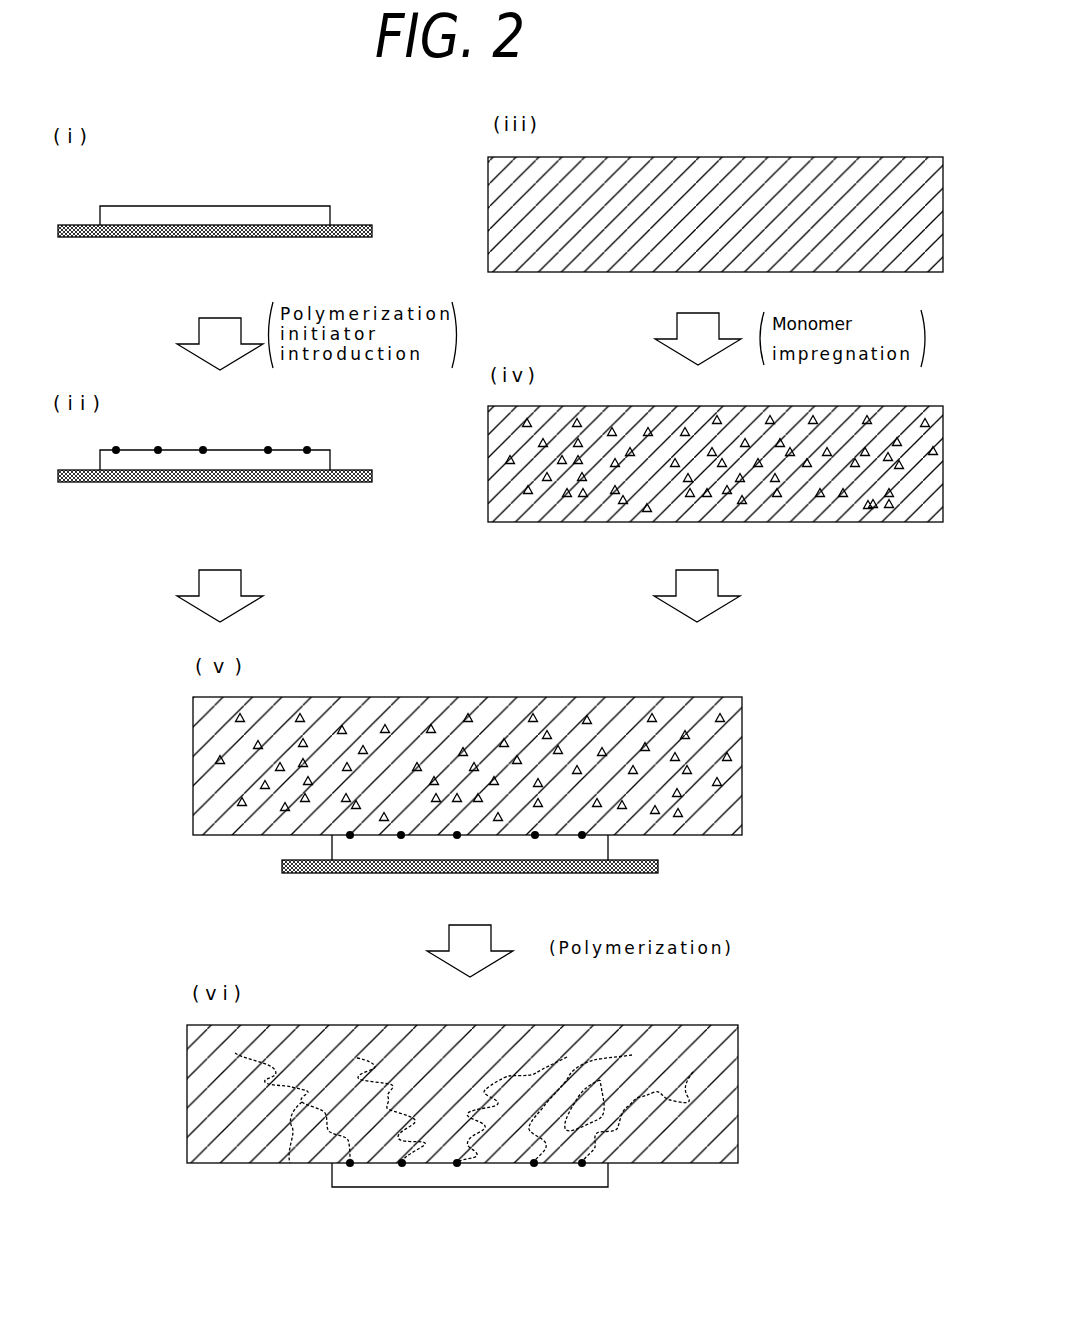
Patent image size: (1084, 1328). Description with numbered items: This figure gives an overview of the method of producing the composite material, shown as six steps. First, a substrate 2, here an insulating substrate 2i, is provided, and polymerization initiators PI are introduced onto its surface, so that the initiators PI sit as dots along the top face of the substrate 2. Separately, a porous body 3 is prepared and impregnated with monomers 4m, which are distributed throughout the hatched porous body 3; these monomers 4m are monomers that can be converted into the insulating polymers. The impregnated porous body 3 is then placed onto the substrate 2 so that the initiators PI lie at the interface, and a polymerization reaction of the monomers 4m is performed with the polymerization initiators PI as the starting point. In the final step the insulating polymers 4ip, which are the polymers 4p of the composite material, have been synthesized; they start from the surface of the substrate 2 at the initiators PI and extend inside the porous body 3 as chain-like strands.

The substrate 2 is at (368, 694).
The insulating substrate 2i is at (273, 206).
The porous body 3 is at (723, 170).
The monomers 4m is at (582, 421).
The polymerization initiators PI is at (205, 450).
The insulating polymers 4ip is at (464, 1137).
The polymers 4p is at (290, 1163).